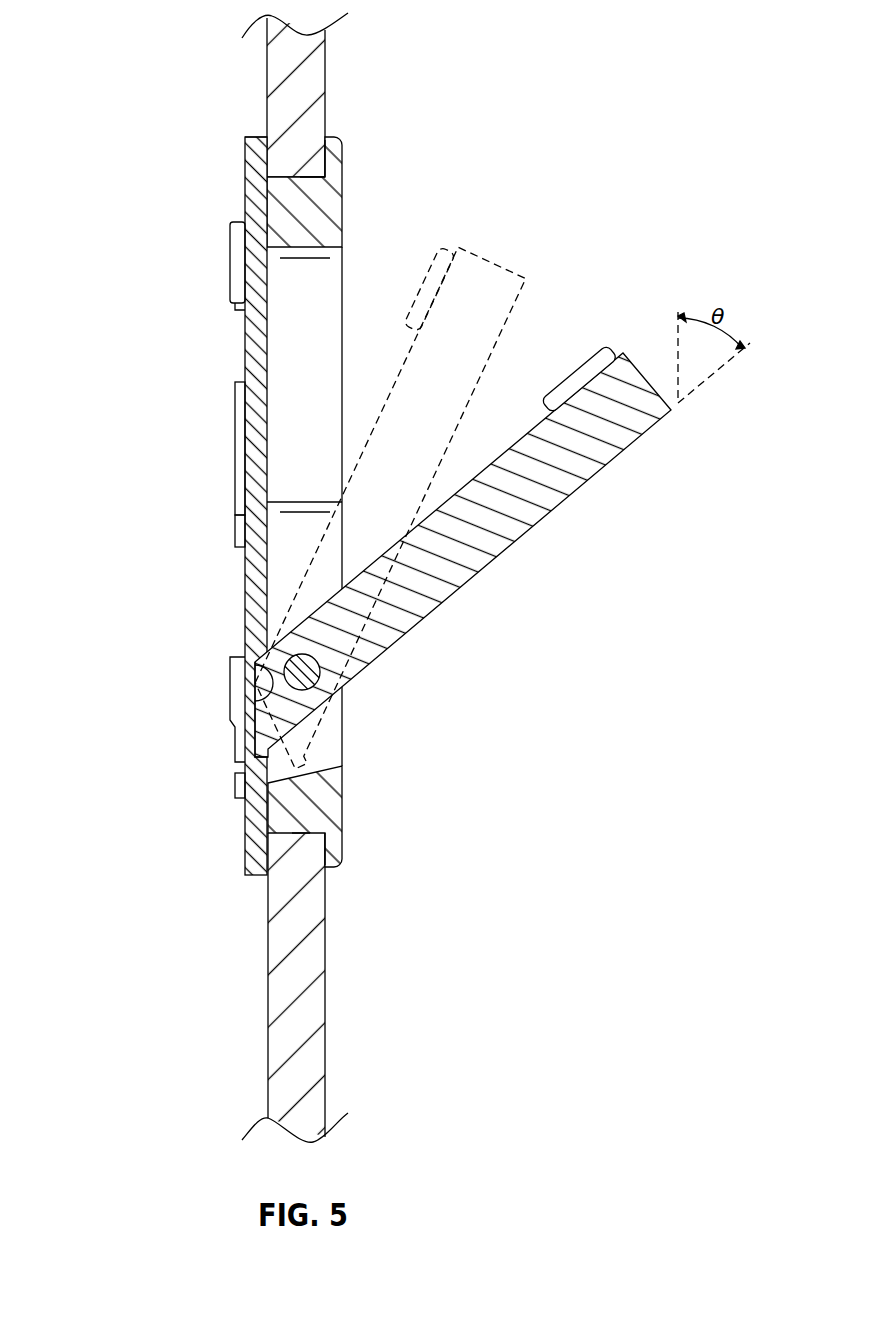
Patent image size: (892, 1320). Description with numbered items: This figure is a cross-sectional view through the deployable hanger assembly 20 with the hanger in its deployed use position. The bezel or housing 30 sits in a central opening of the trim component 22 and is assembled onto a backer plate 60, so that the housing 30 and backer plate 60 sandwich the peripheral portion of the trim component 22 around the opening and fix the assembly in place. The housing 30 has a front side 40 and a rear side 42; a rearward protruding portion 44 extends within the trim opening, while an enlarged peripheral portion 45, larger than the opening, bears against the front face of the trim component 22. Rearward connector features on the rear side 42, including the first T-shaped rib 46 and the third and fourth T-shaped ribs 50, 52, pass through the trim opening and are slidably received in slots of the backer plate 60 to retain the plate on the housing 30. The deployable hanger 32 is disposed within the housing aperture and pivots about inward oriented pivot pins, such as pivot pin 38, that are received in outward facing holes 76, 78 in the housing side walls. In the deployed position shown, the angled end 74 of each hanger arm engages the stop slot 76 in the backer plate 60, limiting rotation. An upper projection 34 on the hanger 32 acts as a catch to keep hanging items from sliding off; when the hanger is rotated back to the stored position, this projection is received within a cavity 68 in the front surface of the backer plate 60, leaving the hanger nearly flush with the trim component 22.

The deployable hanger assembly 20 is at (412, 155).
The trim component 22 is at (325, 1024).
The housing 30 is at (345, 235).
The deployable hanger 32 is at (620, 450).
The upper projection 34 is at (580, 380).
The pivot pin 38 is at (342, 687).
The front side 40 is at (345, 807).
The rear side 42 is at (267, 195).
The rearward protruding portion 44 is at (300, 178).
The enlarged peripheral portion 45 is at (327, 148).
The first T-shaped rib 46 is at (237, 383).
The third T-shaped rib 50 is at (237, 515).
The fourth T-shaped rib 52 is at (242, 800).
The backer plate 60 is at (255, 137).
The cavity 68 is at (232, 262).
The angled end 74 is at (293, 768).
The hole / stop slot 76 is at (268, 658).
The hole 78 is at (335, 652).